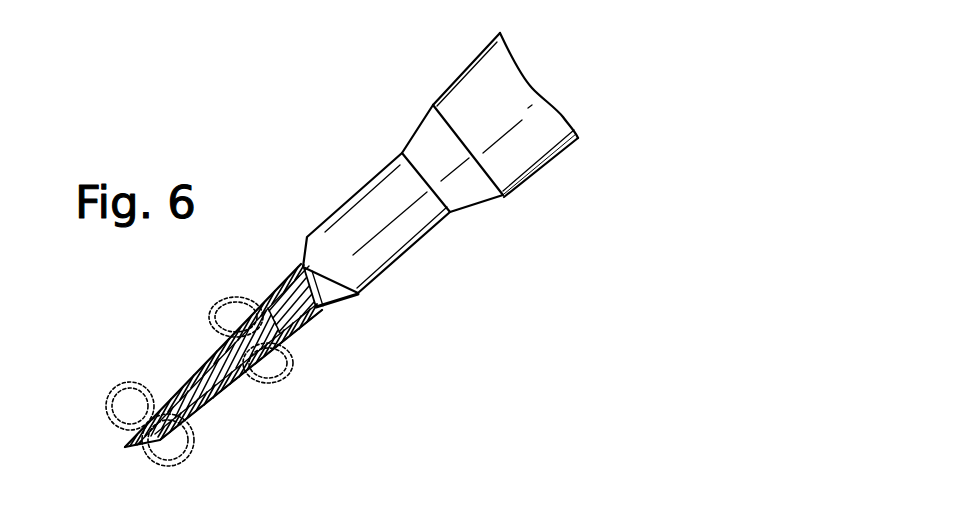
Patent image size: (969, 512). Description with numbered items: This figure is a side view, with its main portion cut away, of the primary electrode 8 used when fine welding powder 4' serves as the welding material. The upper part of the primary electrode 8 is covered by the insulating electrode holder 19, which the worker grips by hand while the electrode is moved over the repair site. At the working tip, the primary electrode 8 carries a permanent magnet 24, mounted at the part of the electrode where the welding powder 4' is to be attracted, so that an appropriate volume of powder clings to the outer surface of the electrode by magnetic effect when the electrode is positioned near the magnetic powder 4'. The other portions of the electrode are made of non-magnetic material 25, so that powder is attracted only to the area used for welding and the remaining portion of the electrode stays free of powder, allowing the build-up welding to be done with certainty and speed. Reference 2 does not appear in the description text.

The insulating electrode holder 19 is at (462, 75).
The primary electrode 8 is at (316, 322).
The permanent magnet 24 is at (272, 362).
The non-magnetic material 25 is at (221, 391).
The core 2 is at (198, 382).
The welding powder 4' is at (199, 360).